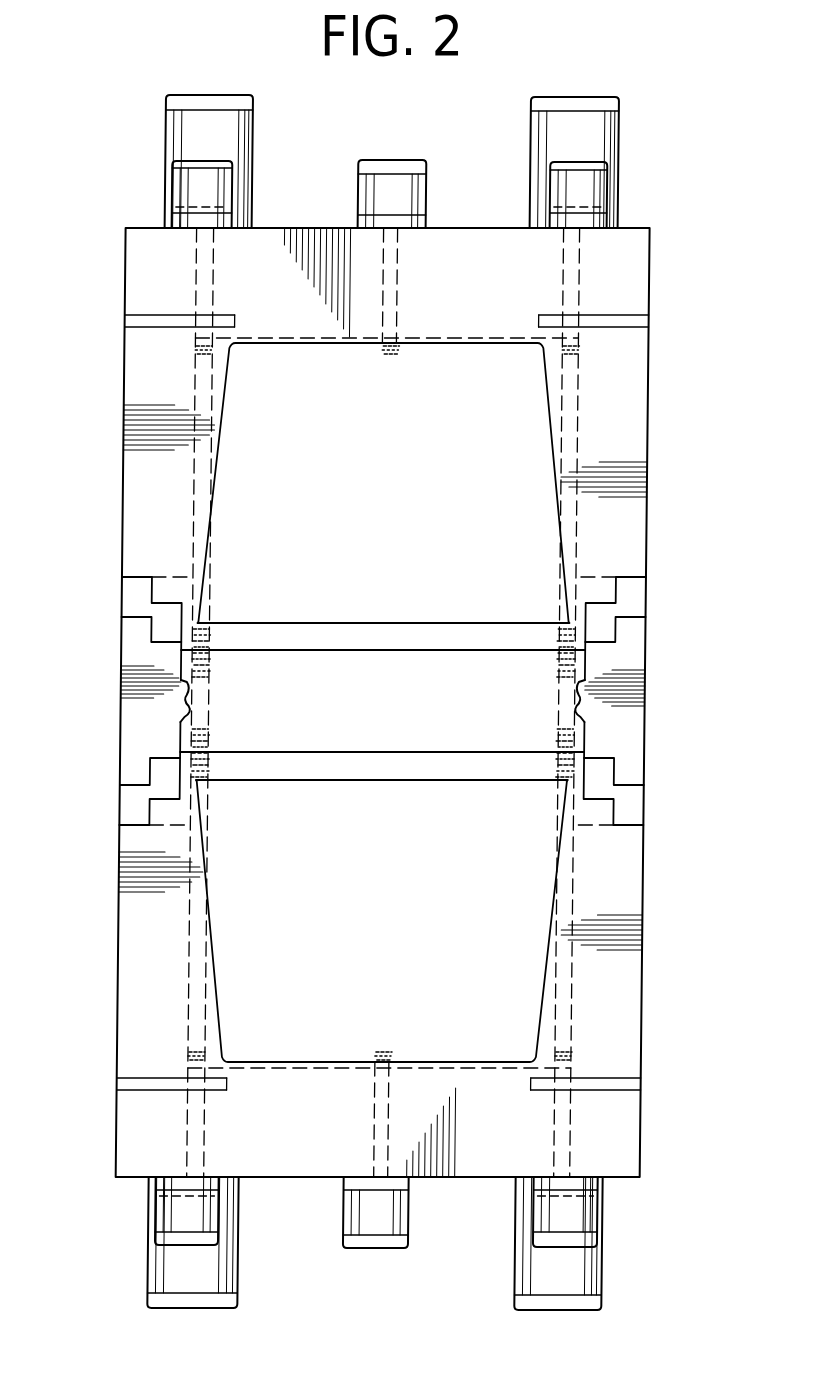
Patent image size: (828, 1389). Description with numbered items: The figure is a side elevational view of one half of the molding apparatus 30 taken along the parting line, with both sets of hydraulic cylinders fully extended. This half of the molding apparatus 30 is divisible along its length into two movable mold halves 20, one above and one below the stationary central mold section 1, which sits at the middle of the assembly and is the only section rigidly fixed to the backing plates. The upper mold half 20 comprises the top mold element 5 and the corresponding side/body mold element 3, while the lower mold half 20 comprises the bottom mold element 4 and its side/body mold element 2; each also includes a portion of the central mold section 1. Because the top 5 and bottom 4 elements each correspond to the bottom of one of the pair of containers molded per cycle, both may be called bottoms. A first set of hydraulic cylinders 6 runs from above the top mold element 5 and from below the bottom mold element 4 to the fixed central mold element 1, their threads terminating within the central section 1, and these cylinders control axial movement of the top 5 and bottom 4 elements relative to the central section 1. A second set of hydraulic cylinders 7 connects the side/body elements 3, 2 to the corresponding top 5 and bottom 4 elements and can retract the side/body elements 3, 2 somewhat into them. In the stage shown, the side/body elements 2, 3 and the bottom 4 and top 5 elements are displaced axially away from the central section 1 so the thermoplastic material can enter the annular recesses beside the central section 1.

The half of the molding apparatus 30 is at (116, 243).
The movable mold half 20 is at (113, 383).
The top mold element 5 is at (643, 290).
The bottom mold element 4 is at (632, 1135).
The side/body mold element 3 is at (637, 433).
The side/body mold element 2 is at (630, 960).
The stationary central mold section 1 is at (645, 715).
The first set of hydraulic cylinders 6 is at (212, 103).
The second set of hydraulic cylinders 7 is at (182, 160).